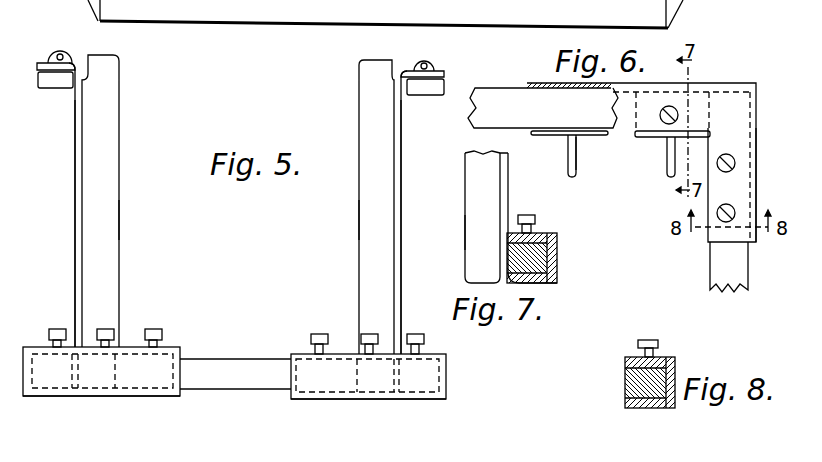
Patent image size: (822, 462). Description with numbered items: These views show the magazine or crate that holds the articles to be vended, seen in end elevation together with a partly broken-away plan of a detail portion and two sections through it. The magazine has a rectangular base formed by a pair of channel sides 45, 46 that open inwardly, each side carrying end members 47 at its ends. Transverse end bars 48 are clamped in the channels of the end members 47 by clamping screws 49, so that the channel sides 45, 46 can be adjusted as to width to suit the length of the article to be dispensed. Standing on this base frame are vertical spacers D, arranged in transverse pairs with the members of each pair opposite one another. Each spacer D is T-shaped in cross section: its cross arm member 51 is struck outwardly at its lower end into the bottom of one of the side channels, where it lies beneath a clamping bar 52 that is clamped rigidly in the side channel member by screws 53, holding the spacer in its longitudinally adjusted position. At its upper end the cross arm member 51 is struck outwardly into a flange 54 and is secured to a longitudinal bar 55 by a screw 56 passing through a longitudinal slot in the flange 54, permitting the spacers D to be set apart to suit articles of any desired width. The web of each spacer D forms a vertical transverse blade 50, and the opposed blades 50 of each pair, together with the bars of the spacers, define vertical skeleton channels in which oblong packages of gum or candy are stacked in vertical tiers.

In FIG. 5, the channel side 45 is at (33, 346).
In FIG. 6, the channel side 45 is at (703, 83).
In FIG. 5, the channel side 46 is at (447, 363).
In FIG. 5, the end member 47 is at (152, 383).
In FIG. 6, the end member 47 is at (757, 137).
In FIG. 8, the end member 47 is at (670, 357).
In FIG. 5, the transverse end bar 48 is at (240, 384).
In FIG. 6, the transverse end bar 48 is at (711, 260).
In FIG. 8, the transverse end bar 48 is at (625, 388).
In FIG. 5, the clamping screw 49 is at (163, 333).
In FIG. 8, the clamping screw 49 is at (645, 340).
In FIG. 5, the vertical transverse blade 50 is at (88, 190).
In FIG. 6, the vertical transverse blade 50 is at (567, 155).
In FIG. 7, the vertical transverse blade 50 is at (472, 192).
In FIG. 5, the cross arm member 51 is at (74, 253).
In FIG. 6, the cross arm member 51 is at (695, 131).
In FIG. 7, the cross arm member 51 is at (510, 192).
In FIG. 6, the clamping bar 52 is at (543, 108).
In FIG. 7, the clamping bar 52 is at (557, 255).
In FIG. 5, the screw 53 is at (68, 328).
In FIG. 6, the screw 53 is at (664, 121).
In FIG. 7, the screw 53 is at (535, 220).
In FIG. 5, the flange 54 is at (42, 63).
In FIG. 5, the longitudinal bar 55 is at (55, 82).
In FIG. 5, the screw 56 is at (65, 55).
In FIG. 5, the vertical spacer D is at (119, 227).
In FIG. 6, the vertical spacer D is at (584, 140).
In FIG. 7, the vertical spacer D is at (464, 232).